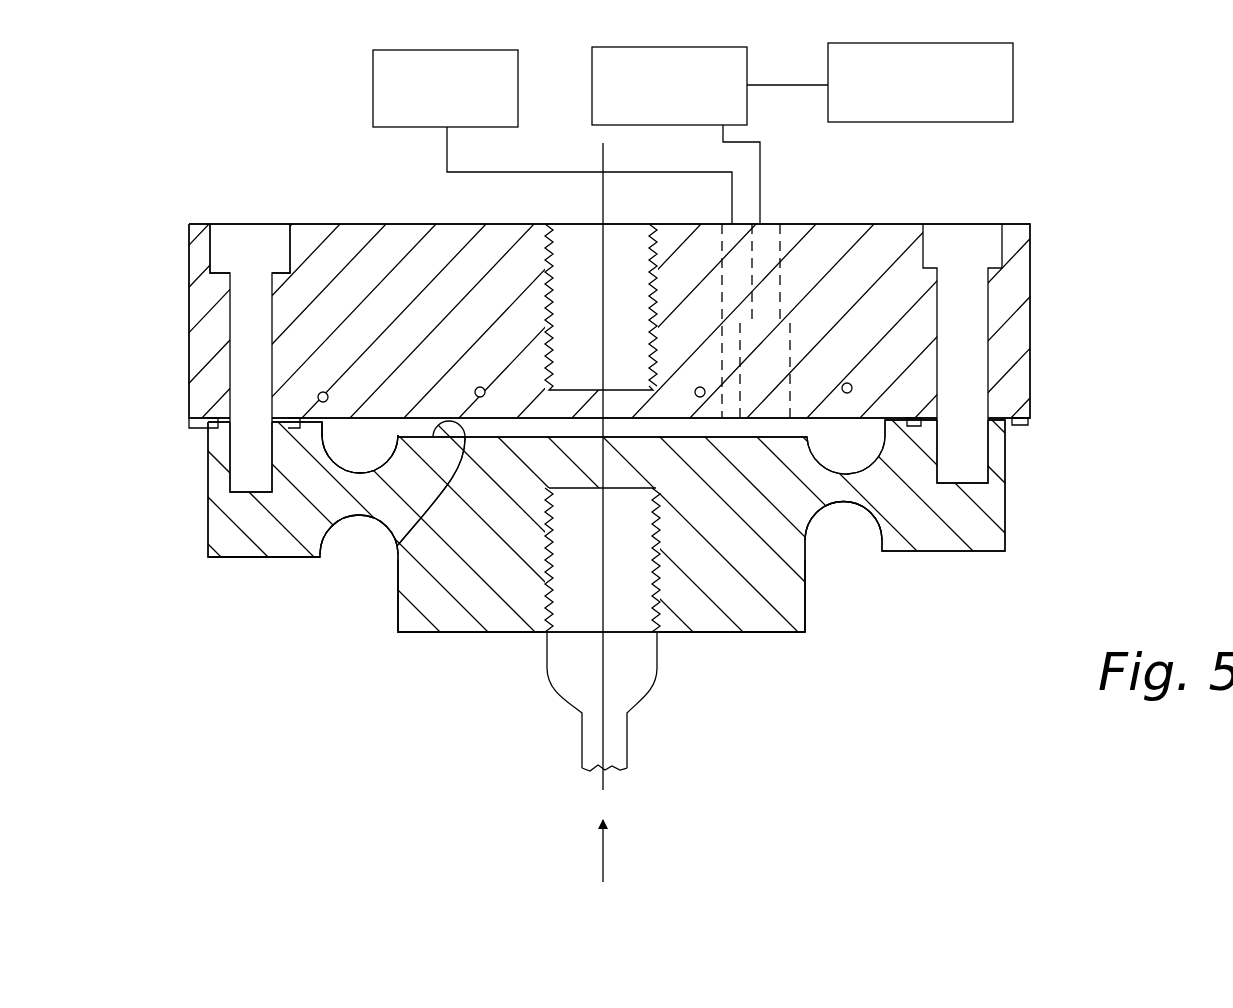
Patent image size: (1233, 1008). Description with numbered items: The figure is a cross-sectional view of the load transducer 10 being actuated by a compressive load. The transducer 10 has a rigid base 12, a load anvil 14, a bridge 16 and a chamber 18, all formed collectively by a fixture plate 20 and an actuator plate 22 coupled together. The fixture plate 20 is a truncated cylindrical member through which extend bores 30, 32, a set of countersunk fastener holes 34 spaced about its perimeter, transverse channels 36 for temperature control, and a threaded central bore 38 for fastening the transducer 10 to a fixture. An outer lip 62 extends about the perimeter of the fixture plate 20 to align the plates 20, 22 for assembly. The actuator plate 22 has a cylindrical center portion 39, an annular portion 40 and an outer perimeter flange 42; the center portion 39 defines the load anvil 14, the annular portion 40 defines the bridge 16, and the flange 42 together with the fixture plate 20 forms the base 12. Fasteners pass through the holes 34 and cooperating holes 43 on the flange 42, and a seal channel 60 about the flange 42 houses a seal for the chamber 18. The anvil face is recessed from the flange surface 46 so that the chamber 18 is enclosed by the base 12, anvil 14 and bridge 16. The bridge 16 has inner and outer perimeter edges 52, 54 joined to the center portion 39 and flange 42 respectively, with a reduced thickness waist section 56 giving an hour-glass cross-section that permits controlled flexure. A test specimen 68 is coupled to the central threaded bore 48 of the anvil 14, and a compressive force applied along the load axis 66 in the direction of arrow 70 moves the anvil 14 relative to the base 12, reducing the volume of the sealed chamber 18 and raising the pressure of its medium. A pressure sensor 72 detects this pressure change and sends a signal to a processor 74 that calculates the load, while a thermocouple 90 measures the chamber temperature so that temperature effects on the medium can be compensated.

The load transducer 10 is at (1048, 330).
The rigid base 12 is at (400, 222).
The load anvil 14 is at (763, 612).
The bridge 16 is at (343, 527).
The chamber 18 is at (410, 502).
The fixture plate 20 is at (1030, 372).
The actuator plate 22 is at (1006, 507).
The bore 30 is at (767, 247).
The bore 32 is at (733, 240).
The countersunk fastener hole 34 is at (253, 350).
The transverse channel 36 is at (323, 391).
The threaded central bore 38 is at (588, 310).
The cylindrical center portion 39 is at (424, 640).
The annular portion 40 is at (866, 532).
The outer perimeter flange 42 is at (218, 560).
The cooperating hole 43 is at (247, 480).
The flange surface 46 is at (205, 410).
The central threaded bore 48 is at (675, 634).
The inner perimeter edge 52 is at (440, 498).
The outer perimeter edge 54 is at (313, 500).
The reduced thickness waist section 56 is at (360, 447).
The seal channel 60 is at (268, 325).
The outer lip 62 is at (1030, 425).
The load axis 66 is at (600, 637).
The test specimen 68 is at (652, 690).
The arrow 70 is at (608, 846).
The pressure sensor 72 is at (702, 44).
The processor 74 is at (1020, 56).
The thermocouple 90 is at (371, 61).